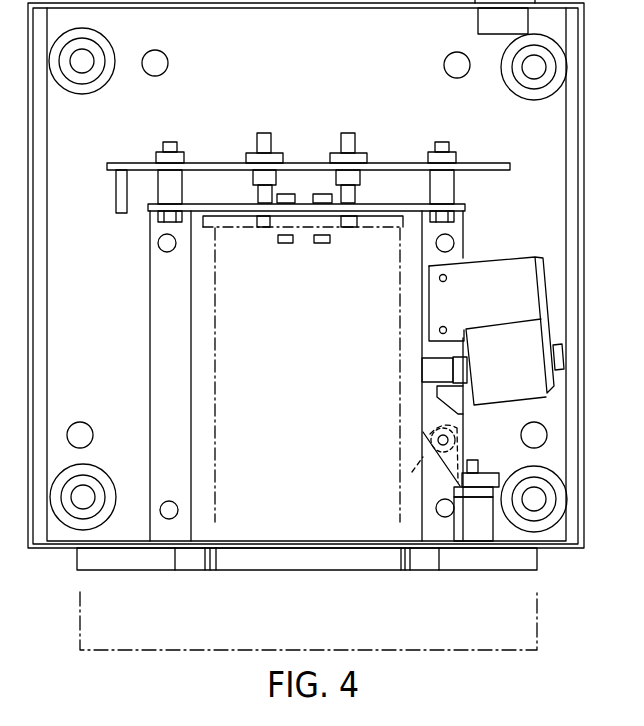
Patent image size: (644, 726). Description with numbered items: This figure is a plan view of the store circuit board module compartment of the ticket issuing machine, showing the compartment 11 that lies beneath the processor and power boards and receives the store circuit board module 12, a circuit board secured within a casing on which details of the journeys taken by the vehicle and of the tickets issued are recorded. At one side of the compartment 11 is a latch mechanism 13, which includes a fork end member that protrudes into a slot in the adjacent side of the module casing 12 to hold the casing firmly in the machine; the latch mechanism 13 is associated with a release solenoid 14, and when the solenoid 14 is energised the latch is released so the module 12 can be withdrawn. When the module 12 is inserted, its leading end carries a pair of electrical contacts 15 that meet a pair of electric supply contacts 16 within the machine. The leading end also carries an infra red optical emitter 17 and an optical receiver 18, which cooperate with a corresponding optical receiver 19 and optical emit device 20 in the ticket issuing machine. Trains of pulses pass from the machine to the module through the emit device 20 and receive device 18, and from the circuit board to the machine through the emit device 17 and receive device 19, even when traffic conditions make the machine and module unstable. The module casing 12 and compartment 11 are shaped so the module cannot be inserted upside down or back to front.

The compartment 11 is at (228, 340).
The store circuit board module 12 is at (310, 528).
The latch mechanism 13 is at (430, 373).
The release solenoid 14 is at (525, 380).
The electrical contacts 15 is at (259, 222).
The electric supply contacts 16 is at (347, 142).
The optical emitter device 17 is at (287, 245).
The optical receiver device 18 is at (322, 245).
The optical receiver device 19 is at (280, 198).
The optical emit device 20 is at (327, 198).